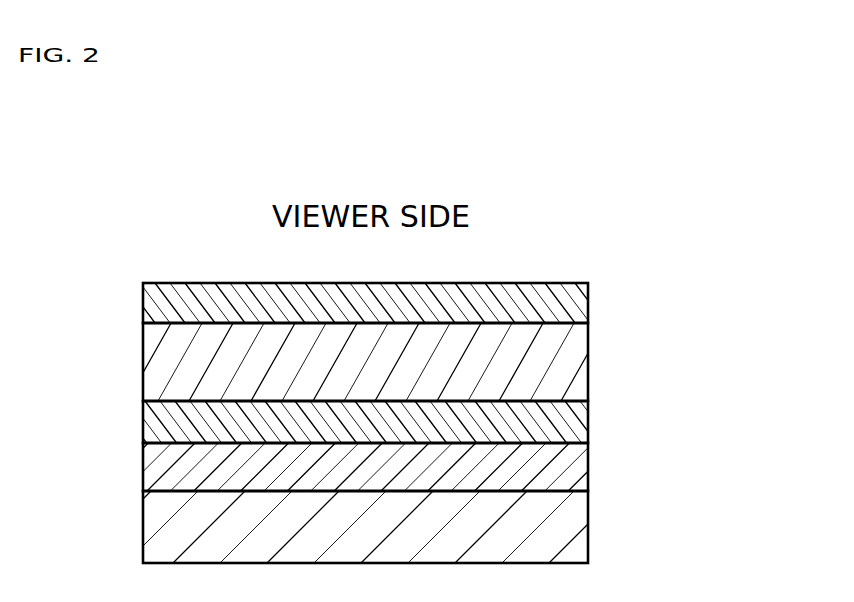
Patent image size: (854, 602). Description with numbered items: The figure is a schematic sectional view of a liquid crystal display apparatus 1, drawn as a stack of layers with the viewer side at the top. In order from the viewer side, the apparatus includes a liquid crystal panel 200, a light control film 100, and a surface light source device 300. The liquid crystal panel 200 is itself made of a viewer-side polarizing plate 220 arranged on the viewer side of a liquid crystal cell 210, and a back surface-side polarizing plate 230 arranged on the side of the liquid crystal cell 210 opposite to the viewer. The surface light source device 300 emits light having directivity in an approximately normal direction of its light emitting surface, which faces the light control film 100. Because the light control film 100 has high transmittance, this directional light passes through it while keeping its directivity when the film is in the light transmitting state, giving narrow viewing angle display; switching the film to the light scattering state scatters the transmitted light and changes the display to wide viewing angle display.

The liquid crystal display apparatus 1 is at (608, 202).
The liquid crystal panel 200 is at (718, 307).
The viewer-side polarizing plate 220 is at (588, 305).
The liquid crystal cell 210 is at (588, 353).
The back surface-side polarizing plate 230 is at (588, 410).
The light control film 100 is at (588, 466).
The surface light source device 300 is at (588, 520).